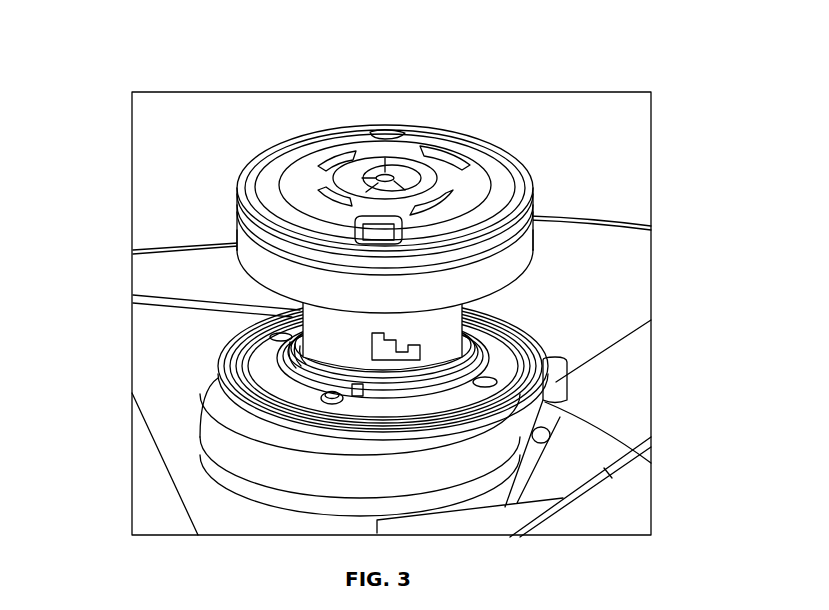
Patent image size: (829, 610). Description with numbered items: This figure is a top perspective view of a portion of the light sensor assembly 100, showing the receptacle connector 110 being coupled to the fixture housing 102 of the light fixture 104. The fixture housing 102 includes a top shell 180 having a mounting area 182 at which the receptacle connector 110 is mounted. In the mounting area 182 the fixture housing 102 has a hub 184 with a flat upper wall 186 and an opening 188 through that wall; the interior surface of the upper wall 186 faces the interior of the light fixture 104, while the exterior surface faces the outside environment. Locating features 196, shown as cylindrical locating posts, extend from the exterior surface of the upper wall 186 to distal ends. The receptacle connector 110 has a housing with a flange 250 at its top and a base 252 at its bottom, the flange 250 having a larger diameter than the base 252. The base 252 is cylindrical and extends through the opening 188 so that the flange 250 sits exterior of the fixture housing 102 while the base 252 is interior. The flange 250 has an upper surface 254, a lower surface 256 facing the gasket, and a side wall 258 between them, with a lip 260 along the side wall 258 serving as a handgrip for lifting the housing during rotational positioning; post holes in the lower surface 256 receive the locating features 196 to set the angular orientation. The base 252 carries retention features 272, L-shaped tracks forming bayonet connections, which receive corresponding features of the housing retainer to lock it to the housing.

The light sensor assembly 100 is at (568, 139).
The fixture housing 102 is at (623, 236).
The light fixture 104 is at (637, 352).
The receptacle connector 110 is at (262, 140).
The top shell 180 is at (152, 407).
The mounting area 182 is at (232, 373).
The hub 184 is at (200, 440).
The upper wall 186 is at (552, 401).
The opening 188 is at (463, 367).
The locating features 196 is at (240, 460).
The flange 250 is at (292, 338).
The base 252 is at (251, 257).
The upper surface 254 is at (487, 151).
The lower surface 256 is at (545, 245).
The side wall 258 is at (535, 292).
The lip 260 is at (517, 282).
The retention features 272 is at (394, 334).